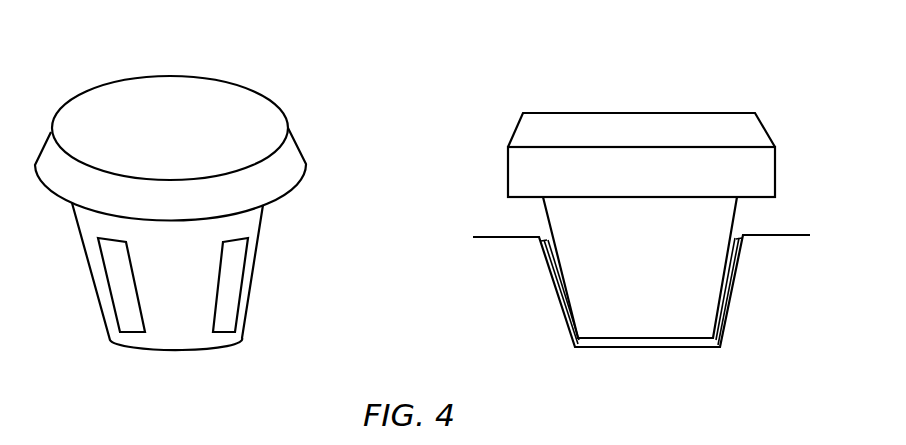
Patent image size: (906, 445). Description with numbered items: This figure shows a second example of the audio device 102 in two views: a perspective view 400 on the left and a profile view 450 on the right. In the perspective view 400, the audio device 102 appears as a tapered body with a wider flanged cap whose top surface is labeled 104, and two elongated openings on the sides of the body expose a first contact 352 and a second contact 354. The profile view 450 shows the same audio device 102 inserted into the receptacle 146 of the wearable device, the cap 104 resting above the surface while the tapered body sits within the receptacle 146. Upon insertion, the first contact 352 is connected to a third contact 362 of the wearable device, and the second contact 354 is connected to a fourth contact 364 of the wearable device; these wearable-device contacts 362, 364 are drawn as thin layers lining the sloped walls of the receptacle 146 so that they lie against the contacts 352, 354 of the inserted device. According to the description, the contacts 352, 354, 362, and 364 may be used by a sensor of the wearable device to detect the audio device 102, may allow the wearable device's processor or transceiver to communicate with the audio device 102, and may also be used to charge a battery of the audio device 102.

The perspective view 400 is at (90, 62).
The profile view 450 is at (506, 96).
The top surface / cap 104 is at (184, 139).
The audio device 102 is at (302, 148).
The receptacle 146 is at (539, 224).
The first contact 352 is at (115, 318).
The second contact 354 is at (238, 295).
The third contact 362 is at (562, 305).
The fourth contact 364 is at (732, 305).